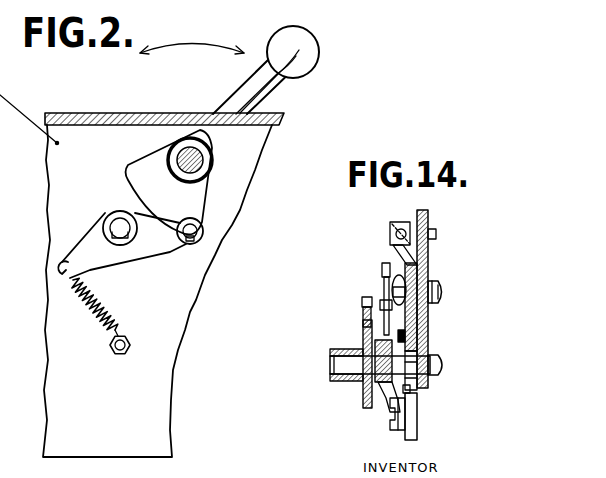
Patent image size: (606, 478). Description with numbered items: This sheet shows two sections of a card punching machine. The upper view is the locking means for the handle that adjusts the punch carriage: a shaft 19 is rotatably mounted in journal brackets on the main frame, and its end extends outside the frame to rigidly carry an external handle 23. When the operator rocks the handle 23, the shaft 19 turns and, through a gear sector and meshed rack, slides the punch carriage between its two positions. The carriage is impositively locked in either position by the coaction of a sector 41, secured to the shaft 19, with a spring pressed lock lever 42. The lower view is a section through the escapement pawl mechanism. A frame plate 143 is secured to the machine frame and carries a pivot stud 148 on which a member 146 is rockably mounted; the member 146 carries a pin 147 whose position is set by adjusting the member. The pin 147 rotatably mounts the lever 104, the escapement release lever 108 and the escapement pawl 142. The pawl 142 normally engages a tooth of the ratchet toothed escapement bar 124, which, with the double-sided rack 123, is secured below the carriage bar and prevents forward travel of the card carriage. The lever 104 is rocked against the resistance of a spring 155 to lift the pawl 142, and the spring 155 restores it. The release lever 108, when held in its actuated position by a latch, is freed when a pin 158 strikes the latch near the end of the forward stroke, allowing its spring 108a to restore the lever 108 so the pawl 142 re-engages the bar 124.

In FIG. 2, the shaft 19 is at (197, 163).
In FIG. 2, the external handle 23 is at (306, 56).
In FIG. 2, the sector 41 is at (152, 163).
In FIG. 2, the spring pressed lock lever 42 is at (93, 236).
In FIG. 14, the lever 104 is at (366, 386).
In FIG. 14, the escapement release lever 108 is at (362, 335).
In FIG. 14, the spring 108a is at (363, 321).
In FIG. 14, the rack 123 is at (418, 423).
In FIG. 14, the escapement bar 124 is at (403, 428).
In FIG. 14, the escapement pawl 142 is at (410, 387).
In FIG. 14, the frame plate 143 is at (428, 252).
In FIG. 14, the member 146 is at (428, 344).
In FIG. 14, the pin 147 is at (330, 362).
In FIG. 14, the pivot stud 148 is at (444, 290).
In FIG. 14, the spring 155 is at (380, 284).
In FIG. 14, the pin 158 is at (392, 410).